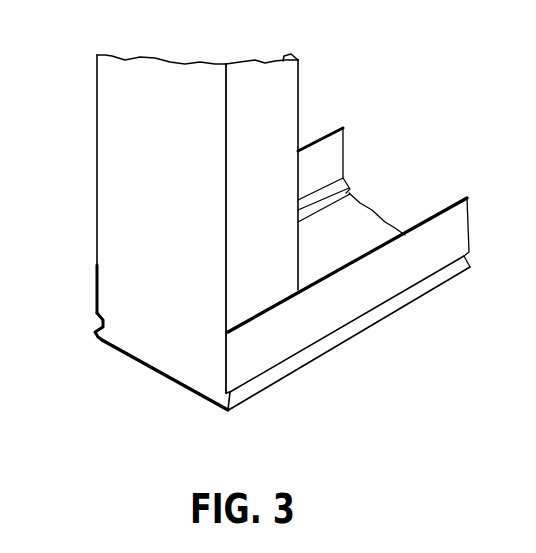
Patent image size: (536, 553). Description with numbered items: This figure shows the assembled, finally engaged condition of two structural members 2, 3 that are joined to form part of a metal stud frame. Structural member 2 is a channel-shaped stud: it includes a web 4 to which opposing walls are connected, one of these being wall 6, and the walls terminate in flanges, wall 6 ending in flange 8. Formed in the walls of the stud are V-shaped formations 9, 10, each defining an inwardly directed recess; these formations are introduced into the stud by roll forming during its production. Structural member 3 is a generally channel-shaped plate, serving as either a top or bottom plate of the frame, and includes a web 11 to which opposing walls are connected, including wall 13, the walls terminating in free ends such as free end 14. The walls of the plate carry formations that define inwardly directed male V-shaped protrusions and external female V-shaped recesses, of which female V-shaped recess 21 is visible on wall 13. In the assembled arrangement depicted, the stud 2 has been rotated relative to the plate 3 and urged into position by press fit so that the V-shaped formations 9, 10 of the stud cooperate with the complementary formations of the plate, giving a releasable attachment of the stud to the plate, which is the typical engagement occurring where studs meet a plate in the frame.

The structural member 2 is at (215, 220).
The structural member 3 is at (359, 330).
The web 4 is at (110, 138).
The wall 6 is at (276, 85).
The flange 8 is at (288, 58).
The V-shaped formation 9 is at (98, 340).
The V-shaped formation 10 is at (233, 397).
The web 11 is at (118, 355).
The wall 13 is at (356, 303).
The free end 14 is at (95, 268).
The female V-shaped recess 21 is at (327, 343).